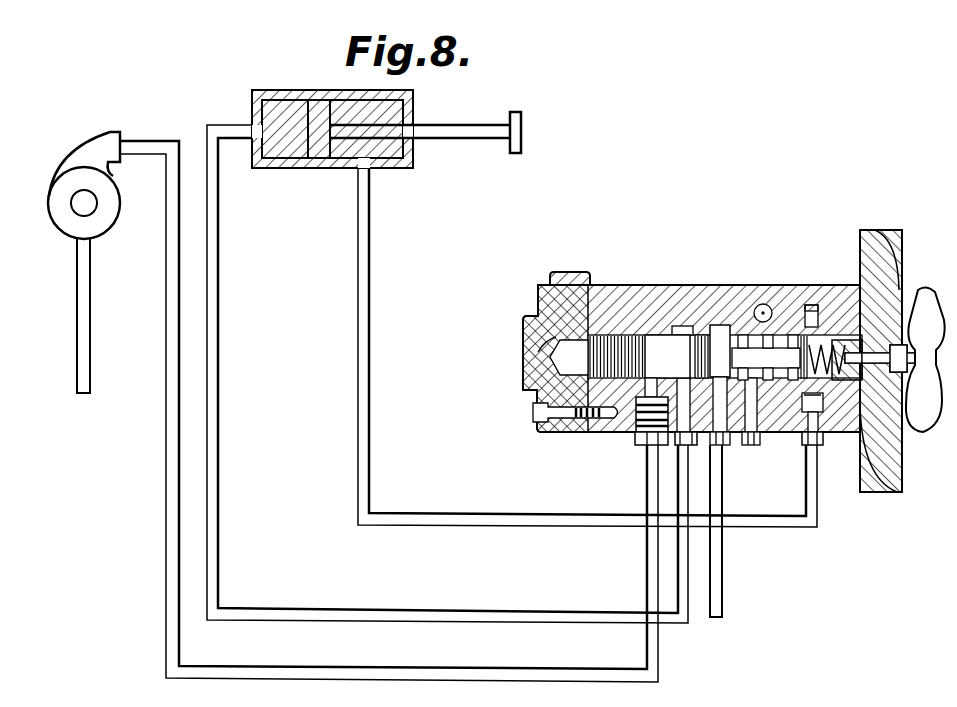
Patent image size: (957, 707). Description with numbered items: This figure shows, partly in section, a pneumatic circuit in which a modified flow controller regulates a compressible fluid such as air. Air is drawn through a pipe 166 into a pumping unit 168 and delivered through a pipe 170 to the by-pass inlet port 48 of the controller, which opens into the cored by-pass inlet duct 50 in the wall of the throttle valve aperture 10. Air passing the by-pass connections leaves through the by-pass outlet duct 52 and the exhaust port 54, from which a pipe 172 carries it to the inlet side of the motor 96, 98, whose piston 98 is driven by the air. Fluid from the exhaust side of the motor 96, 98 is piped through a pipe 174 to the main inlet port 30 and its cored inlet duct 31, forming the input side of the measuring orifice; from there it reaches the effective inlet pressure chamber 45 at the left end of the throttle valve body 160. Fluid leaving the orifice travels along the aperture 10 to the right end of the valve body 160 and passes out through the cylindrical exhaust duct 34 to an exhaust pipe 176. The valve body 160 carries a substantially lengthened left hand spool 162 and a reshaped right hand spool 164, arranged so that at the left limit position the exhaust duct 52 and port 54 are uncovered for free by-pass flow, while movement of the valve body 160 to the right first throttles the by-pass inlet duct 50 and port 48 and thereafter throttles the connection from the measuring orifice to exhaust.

The supporting aperture 10 is at (777, 433).
The inlet port 30 is at (812, 448).
The inlet duct 31 is at (818, 405).
The exhaust port 34 is at (722, 334).
The effective inlet pressure chamber 45 is at (534, 343).
The by-pass inlet port 48 is at (634, 434).
The by-pass inlet duct 50 is at (658, 342).
The by-pass outlet duct 52 is at (712, 323).
The exhaust port 54 is at (688, 403).
The motor 96 is at (298, 90).
The piston 98 is at (322, 113).
The throttle valve body 160 is at (652, 350).
The left hand spool 162 is at (588, 351).
The right hand spool 164 is at (690, 333).
The pipe 166 is at (77, 290).
The pumping unit 168 is at (52, 197).
The pipe 170 is at (168, 497).
The pipe 172 is at (357, 613).
The pipe 174 is at (370, 270).
The exhaust pipe 176 is at (723, 598).